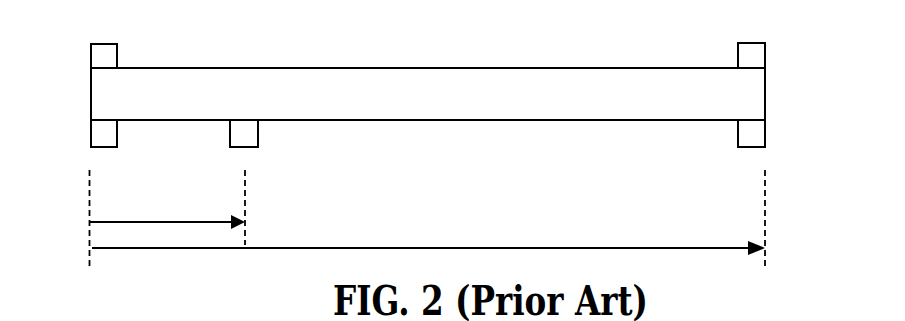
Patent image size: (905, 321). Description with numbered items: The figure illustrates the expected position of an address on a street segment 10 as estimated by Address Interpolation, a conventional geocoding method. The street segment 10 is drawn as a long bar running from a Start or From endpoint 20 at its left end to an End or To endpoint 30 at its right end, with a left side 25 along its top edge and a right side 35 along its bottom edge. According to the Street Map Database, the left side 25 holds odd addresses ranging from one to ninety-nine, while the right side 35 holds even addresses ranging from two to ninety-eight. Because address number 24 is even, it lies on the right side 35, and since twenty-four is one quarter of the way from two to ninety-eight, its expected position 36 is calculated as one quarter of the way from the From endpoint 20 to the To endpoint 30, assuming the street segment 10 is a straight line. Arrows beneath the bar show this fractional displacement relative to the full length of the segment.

The street segment 10 is at (436, 106).
The Start or From endpoint 20 is at (90, 93).
The address number 24 is at (244, 133).
The left side 25 is at (558, 66).
The End or To endpoint 30 is at (766, 93).
The right side 35 is at (545, 121).
The expected position 36 is at (250, 147).